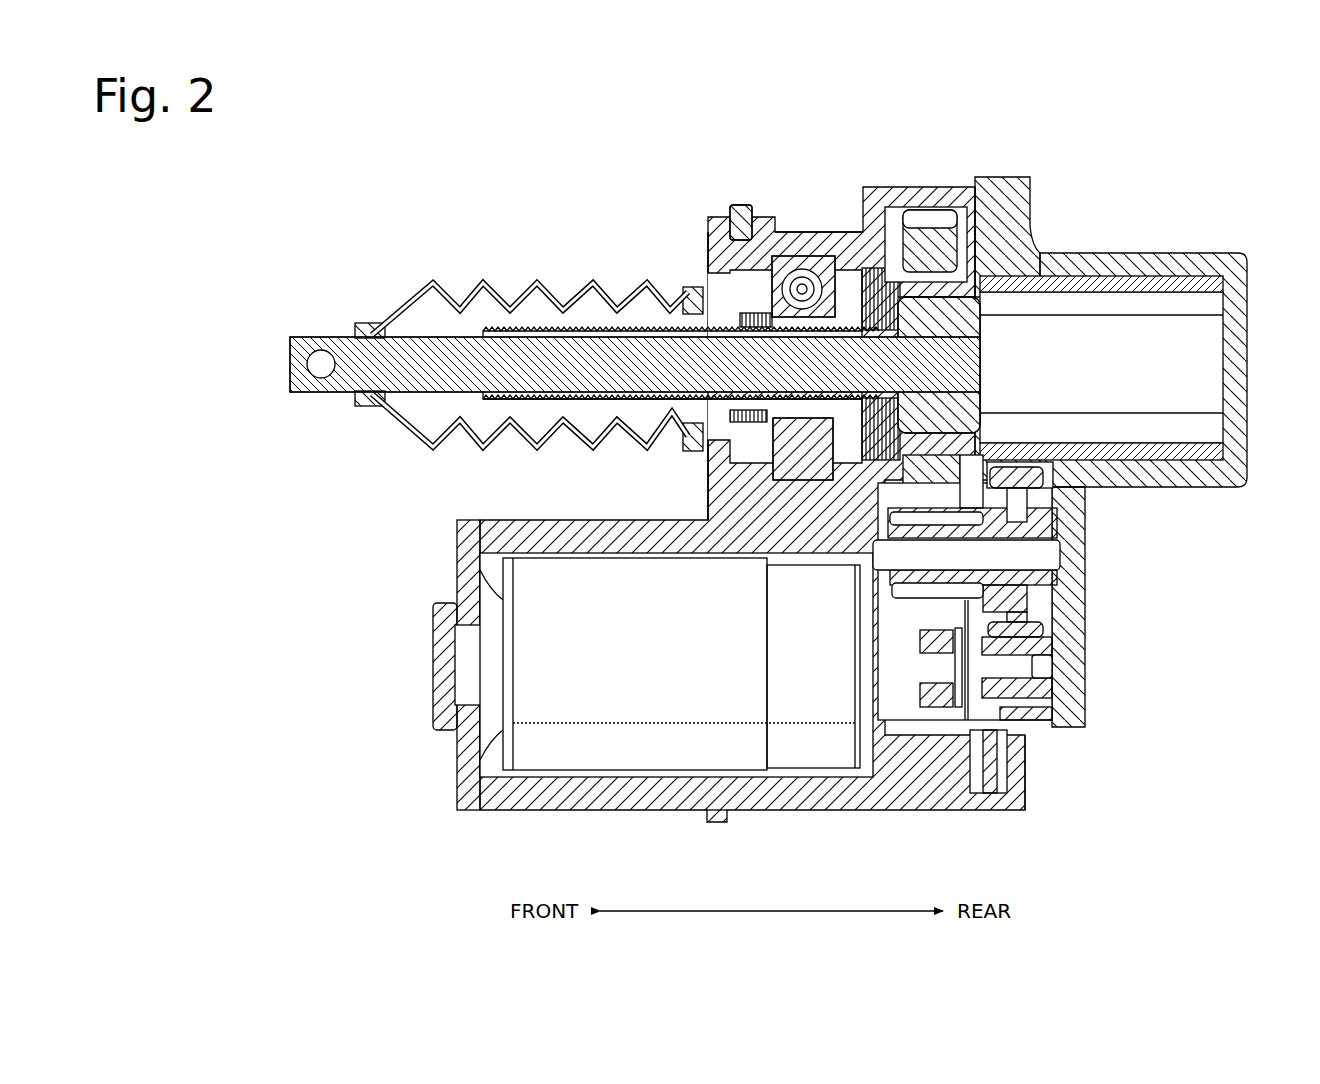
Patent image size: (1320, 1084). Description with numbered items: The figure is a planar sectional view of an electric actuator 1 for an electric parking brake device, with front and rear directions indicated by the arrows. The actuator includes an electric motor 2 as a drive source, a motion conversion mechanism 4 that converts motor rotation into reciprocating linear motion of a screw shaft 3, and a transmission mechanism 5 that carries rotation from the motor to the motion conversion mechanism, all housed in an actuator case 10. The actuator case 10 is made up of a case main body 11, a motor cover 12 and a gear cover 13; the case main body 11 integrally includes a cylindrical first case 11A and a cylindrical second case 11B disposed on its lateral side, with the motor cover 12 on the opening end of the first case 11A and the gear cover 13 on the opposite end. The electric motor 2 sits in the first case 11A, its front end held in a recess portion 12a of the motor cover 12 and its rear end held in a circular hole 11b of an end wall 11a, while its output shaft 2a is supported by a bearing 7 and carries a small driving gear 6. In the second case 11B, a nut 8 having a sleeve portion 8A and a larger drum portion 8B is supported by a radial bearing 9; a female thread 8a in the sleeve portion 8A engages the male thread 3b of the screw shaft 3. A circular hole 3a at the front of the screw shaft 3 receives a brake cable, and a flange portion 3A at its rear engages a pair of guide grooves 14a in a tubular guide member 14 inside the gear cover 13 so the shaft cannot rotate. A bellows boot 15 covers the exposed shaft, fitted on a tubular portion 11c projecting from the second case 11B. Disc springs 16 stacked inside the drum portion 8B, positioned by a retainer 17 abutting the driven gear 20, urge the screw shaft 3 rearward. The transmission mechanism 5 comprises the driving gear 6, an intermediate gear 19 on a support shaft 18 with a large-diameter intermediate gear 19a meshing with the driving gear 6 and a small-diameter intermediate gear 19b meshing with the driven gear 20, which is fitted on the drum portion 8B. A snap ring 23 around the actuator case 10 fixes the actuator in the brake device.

The electric actuator 1 is at (1092, 205).
The electric motor 2 is at (772, 709).
The output shaft 2a is at (1030, 690).
The screw shaft 3 is at (626, 355).
The circular hole 3a is at (320, 372).
The male thread 3b is at (578, 402).
The flange portion 3A is at (985, 390).
The motion conversion mechanism 4 is at (635, 328).
The transmission mechanism 5 is at (1022, 665).
The driving gear 6 is at (1060, 690).
The bearing 7 is at (935, 705).
The nut 8 is at (765, 323).
The female thread 8a is at (830, 392).
The sleeve portion 8A is at (745, 448).
The drum portion 8B is at (828, 290).
The radial bearing 9 is at (795, 280).
The actuator case 10 is at (1032, 185).
The case main body 11 is at (872, 812).
The end wall 11a is at (962, 805).
The first case 11A is at (792, 812).
The circular hole 11b is at (890, 700).
The second case 11B is at (830, 232).
The tubular portion 11c is at (692, 428).
The motor cover 12 is at (426, 665).
The recess portion 12a is at (445, 680).
The gear cover 13 is at (1250, 300).
The guide member 14 is at (1092, 292).
The guide grooves 14a is at (1122, 315).
The bellows boot 15 is at (535, 285).
The disc springs 16 is at (857, 462).
The retainer 17 is at (980, 320).
The support shaft 18 is at (1050, 556).
The intermediate gear 19 is at (980, 509).
The large-diameter intermediate gear 19a is at (1030, 470).
The small-diameter intermediate gear 19b is at (905, 590).
The driven gear 20 is at (922, 225).
The snap ring 23 is at (742, 212).